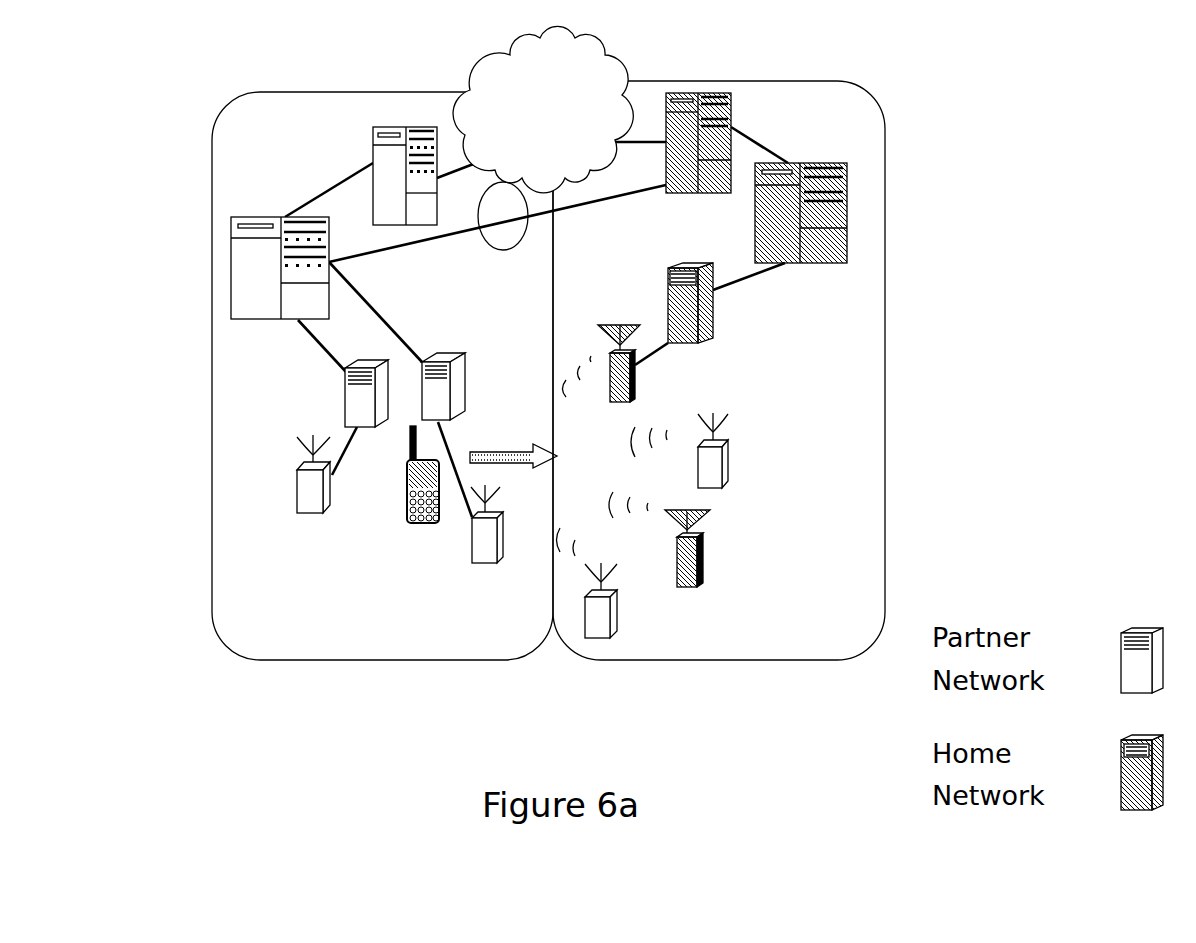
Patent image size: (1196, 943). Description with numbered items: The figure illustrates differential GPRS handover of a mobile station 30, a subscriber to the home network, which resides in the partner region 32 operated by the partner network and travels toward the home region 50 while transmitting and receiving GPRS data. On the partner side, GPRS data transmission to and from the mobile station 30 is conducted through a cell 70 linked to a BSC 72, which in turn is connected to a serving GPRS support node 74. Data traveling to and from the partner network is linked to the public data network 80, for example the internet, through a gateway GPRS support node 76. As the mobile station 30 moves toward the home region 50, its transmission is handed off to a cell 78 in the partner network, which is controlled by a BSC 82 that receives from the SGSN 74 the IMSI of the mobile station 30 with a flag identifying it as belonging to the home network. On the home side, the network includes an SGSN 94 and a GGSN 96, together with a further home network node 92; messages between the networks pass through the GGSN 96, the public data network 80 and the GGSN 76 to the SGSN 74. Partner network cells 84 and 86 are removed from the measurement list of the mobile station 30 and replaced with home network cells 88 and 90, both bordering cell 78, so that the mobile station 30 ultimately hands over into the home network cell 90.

The mobile station 30 is at (405, 507).
The partner region 32 is at (195, 353).
The home region 50 is at (910, 424).
The cell 70 is at (315, 488).
The BSC 72 is at (360, 408).
The serving GPRS support node 74 is at (242, 262).
The gateway GPRS support node 76 is at (383, 152).
The cell 78 is at (485, 537).
The public data network 80 is at (543, 109).
The BSC 82 is at (460, 383).
The cell 84 is at (603, 617).
The cell 86 is at (712, 472).
The cell 88 is at (702, 567).
The cell 90 is at (635, 380).
The home network server 92 is at (713, 312).
The SGSN 94 is at (848, 203).
The GGSN 96 is at (730, 117).